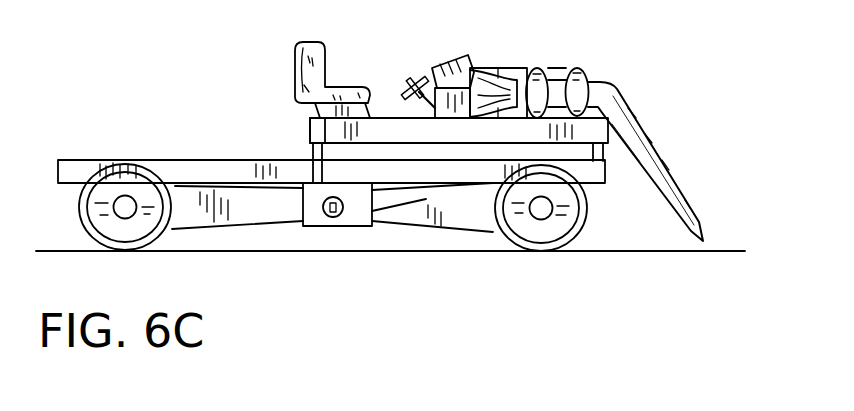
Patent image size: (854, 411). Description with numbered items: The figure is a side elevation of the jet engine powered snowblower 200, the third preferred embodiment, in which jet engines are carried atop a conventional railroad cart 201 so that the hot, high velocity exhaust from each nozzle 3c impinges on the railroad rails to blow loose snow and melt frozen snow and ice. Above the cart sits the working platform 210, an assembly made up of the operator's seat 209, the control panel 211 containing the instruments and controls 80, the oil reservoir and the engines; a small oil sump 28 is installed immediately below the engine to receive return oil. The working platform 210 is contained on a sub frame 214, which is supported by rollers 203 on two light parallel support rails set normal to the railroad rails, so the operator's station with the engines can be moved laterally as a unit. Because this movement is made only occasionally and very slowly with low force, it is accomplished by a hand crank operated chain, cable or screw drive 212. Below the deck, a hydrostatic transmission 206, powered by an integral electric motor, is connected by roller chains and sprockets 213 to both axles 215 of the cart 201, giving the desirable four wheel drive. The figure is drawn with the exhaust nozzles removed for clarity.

The jet engine powered snowblower 200 is at (150, 125).
The railroad cart 201 is at (288, 173).
The rollers 203 is at (310, 132).
The hydrostatic transmission 206 is at (426, 199).
The operator's seat 209 is at (327, 60).
The working platform 210 is at (577, 82).
The control panel 211 is at (443, 63).
The hand crank operated chain, cable or screw drive 212 is at (402, 84).
The roller chains and sprockets 213 is at (262, 222).
The sub frame 214 is at (528, 133).
The axles 215 is at (125, 207).
The oil sump 28 is at (559, 110).
The instruments and controls 80 is at (493, 67).
The exhaust nozzle 3c is at (663, 182).